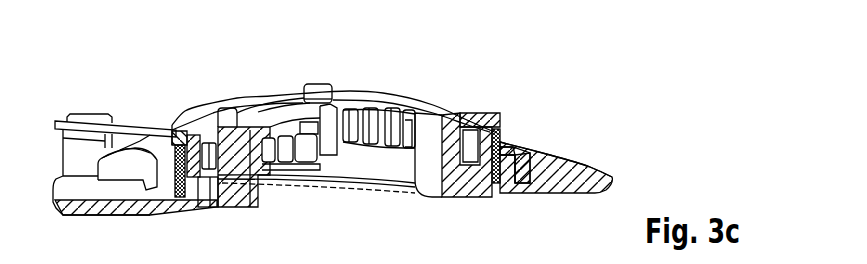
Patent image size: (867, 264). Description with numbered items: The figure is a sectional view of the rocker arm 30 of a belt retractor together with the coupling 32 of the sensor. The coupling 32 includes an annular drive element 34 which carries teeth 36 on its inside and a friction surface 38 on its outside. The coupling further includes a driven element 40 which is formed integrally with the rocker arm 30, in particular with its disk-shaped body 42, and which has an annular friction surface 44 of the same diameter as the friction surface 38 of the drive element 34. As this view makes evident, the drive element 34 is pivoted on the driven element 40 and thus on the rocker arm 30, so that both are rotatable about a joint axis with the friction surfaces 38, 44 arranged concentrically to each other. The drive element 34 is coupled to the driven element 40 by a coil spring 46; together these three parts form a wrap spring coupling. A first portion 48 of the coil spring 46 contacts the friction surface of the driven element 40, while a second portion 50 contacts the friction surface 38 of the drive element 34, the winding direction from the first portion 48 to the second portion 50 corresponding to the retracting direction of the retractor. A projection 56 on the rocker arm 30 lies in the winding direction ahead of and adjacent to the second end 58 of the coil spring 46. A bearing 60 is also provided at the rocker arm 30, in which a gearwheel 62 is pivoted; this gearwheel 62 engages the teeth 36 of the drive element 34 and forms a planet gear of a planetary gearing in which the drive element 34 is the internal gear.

The rocker arm 30 is at (600, 175).
The coupling 32 is at (505, 132).
The drive element 34 is at (462, 124).
The teeth 36 is at (470, 143).
The friction surface 38 is at (500, 137).
The driven element 40 is at (573, 186).
The disk-shaped body 42 is at (481, 185).
The annular friction surface 44 is at (500, 186).
The coil spring 46 is at (500, 164).
The first portion 48 is at (178, 188).
The second portion 50 is at (163, 168).
The projection 56 is at (96, 118).
The second end 58 is at (144, 132).
The bearing 60 is at (249, 136).
The gearwheel 62 is at (310, 160).